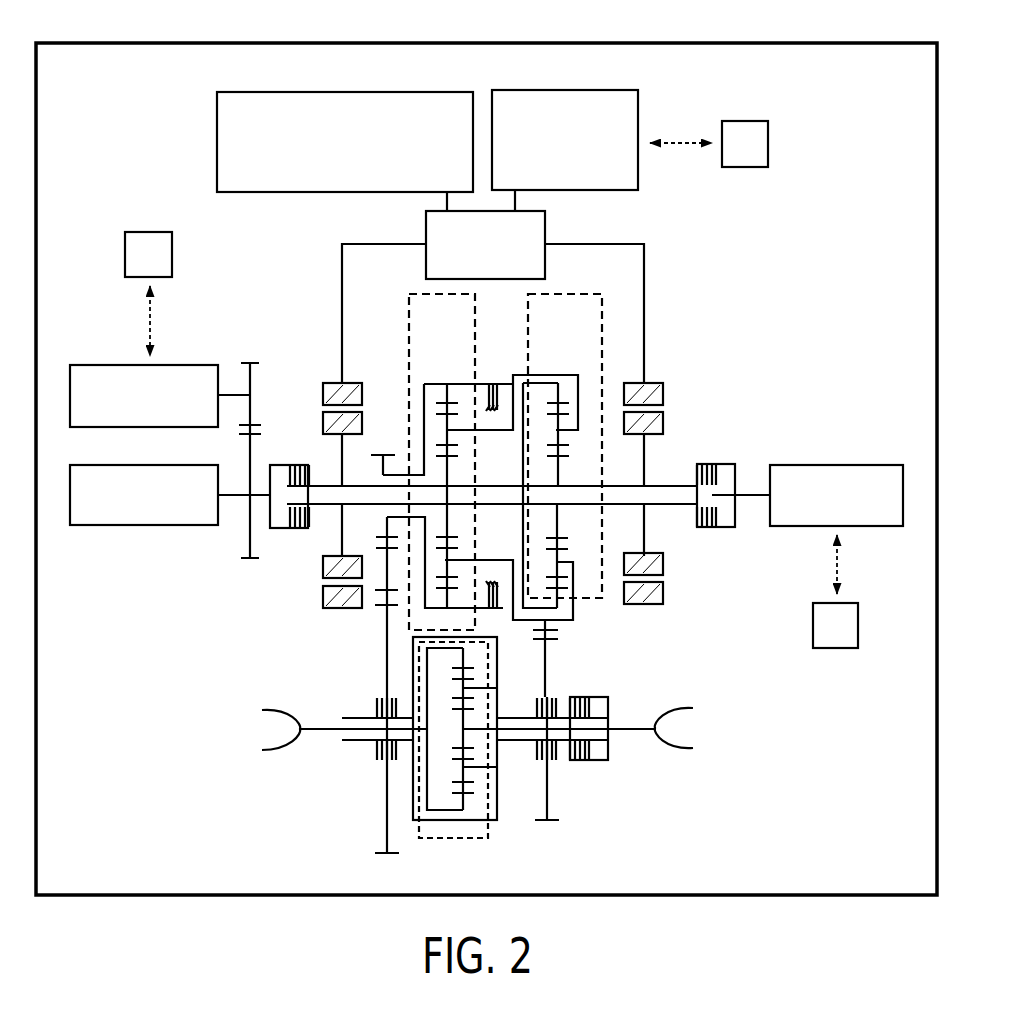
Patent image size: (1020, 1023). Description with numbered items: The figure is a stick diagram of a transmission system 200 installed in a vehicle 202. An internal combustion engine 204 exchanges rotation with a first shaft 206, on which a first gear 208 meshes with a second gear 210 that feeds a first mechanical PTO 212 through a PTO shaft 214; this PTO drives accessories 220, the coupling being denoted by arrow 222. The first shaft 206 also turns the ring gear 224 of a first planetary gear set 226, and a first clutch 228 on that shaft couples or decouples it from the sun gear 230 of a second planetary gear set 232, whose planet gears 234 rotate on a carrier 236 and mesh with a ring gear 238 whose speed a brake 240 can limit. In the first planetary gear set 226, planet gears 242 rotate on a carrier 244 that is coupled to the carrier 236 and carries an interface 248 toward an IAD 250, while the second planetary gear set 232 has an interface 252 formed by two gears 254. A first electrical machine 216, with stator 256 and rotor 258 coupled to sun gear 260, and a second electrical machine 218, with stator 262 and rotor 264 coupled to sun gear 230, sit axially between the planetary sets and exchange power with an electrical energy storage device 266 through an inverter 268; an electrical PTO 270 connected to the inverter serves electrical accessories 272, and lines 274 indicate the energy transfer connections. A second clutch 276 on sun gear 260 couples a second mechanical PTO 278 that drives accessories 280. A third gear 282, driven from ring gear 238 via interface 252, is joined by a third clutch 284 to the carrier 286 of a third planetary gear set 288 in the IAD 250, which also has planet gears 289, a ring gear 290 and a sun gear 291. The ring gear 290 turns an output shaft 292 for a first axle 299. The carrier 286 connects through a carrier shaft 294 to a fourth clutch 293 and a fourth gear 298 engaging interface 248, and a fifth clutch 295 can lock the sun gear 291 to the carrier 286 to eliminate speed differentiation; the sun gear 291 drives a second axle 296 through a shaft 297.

The transmission system 200 is at (843, 150).
The vehicle 202 is at (40, 50).
The internal combustion engine 204 is at (72, 525).
The first shaft 206 is at (235, 497).
The first gear 208 is at (249, 447).
The second gear 210 is at (250, 405).
The first mechanical PTO 212 is at (72, 366).
The PTO shaft 214 is at (230, 395).
The first electrical machine 216 is at (680, 383).
The second electrical machine 218 is at (316, 396).
The accessories 220 is at (150, 232).
The arrow 222 is at (150, 305).
The ring gear 224 is at (558, 394).
The first planetary gear set 226 is at (560, 294).
The first clutch 228 is at (282, 535).
The sun gear 230 is at (447, 470).
The second planetary gear set 232 is at (417, 294).
The planet gears 234 is at (437, 426).
The carrier 236 is at (505, 430).
The ring gear 238 is at (447, 386).
The brake 240 is at (494, 378).
The planet gears 242 is at (560, 552).
The carrier 244 is at (582, 418).
The interface 248 is at (562, 628).
The IAD 250 is at (350, 675).
The interface 252 is at (372, 552).
The gears 254 is at (383, 455).
The stator 256 is at (644, 383).
The rotor 258 is at (664, 421).
The sun gear 260 is at (584, 460).
The stator 262 is at (338, 383).
The rotor 264 is at (323, 565).
The electrical energy storage device 266 is at (217, 127).
The inverter 268 is at (545, 226).
The electrical PTO 270 is at (639, 130).
The electrical accessories 272 is at (768, 155).
The lines 274 is at (400, 207).
The second clutch 276 is at (712, 535).
The second mechanical PTO 278 is at (775, 465).
The accessories 280 is at (858, 642).
The third gear 282 is at (385, 823).
The third clutch 284 is at (363, 752).
The carrier 286 is at (480, 690).
The third planetary gear set 288 is at (428, 838).
The planet gears 289 is at (462, 688).
The ring gear 290 is at (463, 800).
The sun gear 291 is at (467, 737).
The output shaft 292 is at (316, 727).
The fourth clutch 293 is at (567, 763).
The carrier shaft 294 is at (520, 718).
The fifth clutch 295 is at (607, 692).
The second axle 296 is at (705, 722).
The shaft 297 is at (628, 730).
The fourth gear 298 is at (548, 815).
The first axle 299 is at (255, 725).